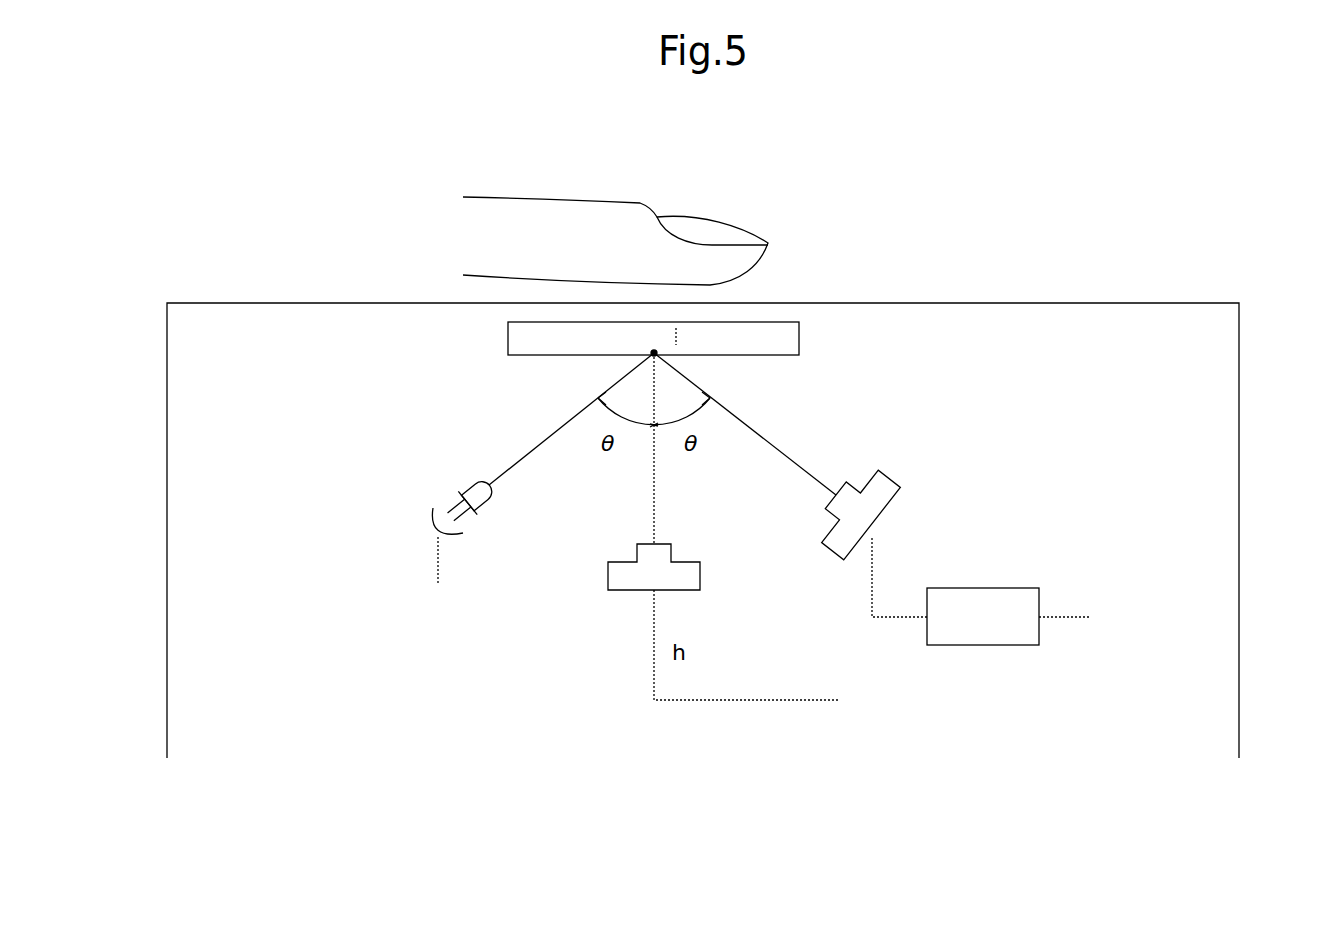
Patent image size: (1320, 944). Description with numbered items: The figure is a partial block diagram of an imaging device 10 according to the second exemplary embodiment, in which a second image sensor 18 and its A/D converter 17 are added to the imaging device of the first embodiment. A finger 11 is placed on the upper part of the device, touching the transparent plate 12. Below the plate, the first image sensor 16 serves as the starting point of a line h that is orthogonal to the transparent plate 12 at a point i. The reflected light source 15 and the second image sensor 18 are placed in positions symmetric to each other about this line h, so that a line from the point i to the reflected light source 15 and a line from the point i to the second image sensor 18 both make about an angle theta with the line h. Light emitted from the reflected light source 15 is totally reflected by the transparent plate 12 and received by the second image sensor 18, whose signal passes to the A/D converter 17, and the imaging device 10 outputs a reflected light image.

The imaging device 10 is at (1020, 303).
The finger 11 is at (533, 197).
The transparent plate 12 is at (799, 338).
The reflected light source 15 is at (450, 488).
The first image sensor 16 is at (630, 592).
The A/D converter 17 is at (1000, 588).
The second image sensor 18 is at (890, 480).